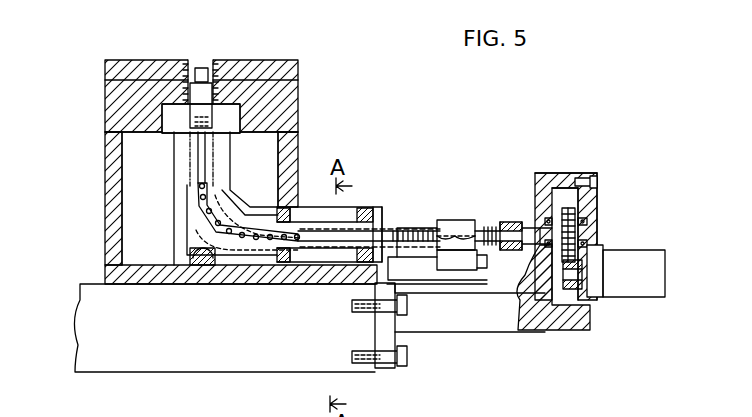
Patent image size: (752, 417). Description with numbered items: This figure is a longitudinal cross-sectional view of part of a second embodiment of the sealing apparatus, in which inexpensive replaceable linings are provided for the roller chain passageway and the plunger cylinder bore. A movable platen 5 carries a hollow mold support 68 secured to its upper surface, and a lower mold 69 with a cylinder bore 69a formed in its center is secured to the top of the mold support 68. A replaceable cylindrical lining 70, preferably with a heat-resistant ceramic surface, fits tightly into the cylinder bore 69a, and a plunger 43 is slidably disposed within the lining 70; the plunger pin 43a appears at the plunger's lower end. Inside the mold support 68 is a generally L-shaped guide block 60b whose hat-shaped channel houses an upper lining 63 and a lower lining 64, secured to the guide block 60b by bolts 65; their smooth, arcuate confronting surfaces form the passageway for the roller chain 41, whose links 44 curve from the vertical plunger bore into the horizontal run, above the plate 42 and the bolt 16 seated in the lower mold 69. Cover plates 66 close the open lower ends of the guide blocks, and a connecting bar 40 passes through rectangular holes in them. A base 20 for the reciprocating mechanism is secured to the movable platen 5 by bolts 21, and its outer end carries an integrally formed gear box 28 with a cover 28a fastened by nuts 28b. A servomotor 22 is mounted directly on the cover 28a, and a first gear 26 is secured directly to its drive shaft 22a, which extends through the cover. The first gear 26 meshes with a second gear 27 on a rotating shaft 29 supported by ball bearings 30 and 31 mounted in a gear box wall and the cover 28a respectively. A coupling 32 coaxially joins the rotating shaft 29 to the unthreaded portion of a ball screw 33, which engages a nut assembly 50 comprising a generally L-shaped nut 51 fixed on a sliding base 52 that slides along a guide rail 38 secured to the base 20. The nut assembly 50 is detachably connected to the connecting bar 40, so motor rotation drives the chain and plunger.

The movable platen 5 is at (277, 365).
The bolt 16 is at (202, 68).
The base 20 is at (505, 300).
The bolts 21 is at (407, 350).
The servomotor 22 is at (648, 297).
The drive shaft 22a is at (598, 297).
The first gear 26 is at (568, 289).
The second gear 27 is at (575, 212).
The gear box 28 is at (562, 173).
The cover 28a is at (586, 173).
The nuts 28b is at (597, 181).
The rotating shaft 29 is at (540, 305).
The ball bearing 30 is at (548, 178).
The ball bearing 31 is at (590, 221).
The coupling 32 is at (508, 222).
The ball screw 33 is at (428, 231).
The guide rail 38 is at (470, 284).
The connecting bar 40 is at (400, 231).
The roller chain 41 is at (218, 265).
The bottom plate 42 is at (318, 284).
The plunger 43 is at (225, 110).
The slider pin 43a is at (205, 147).
The chain 44 is at (197, 200).
The nut assembly 50 is at (462, 220).
The nut 51 is at (470, 220).
The sliding base 52 is at (452, 270).
The guide block 60b is at (250, 262).
The upper lining 63 is at (222, 198).
The lower lining 64 is at (200, 233).
The bolts 65 is at (365, 208).
The cover plates 66 is at (380, 222).
The mold support 68 is at (105, 166).
The lower mold 69 is at (105, 100).
The cylinder bore 69a is at (192, 60).
The lining 70 is at (216, 64).